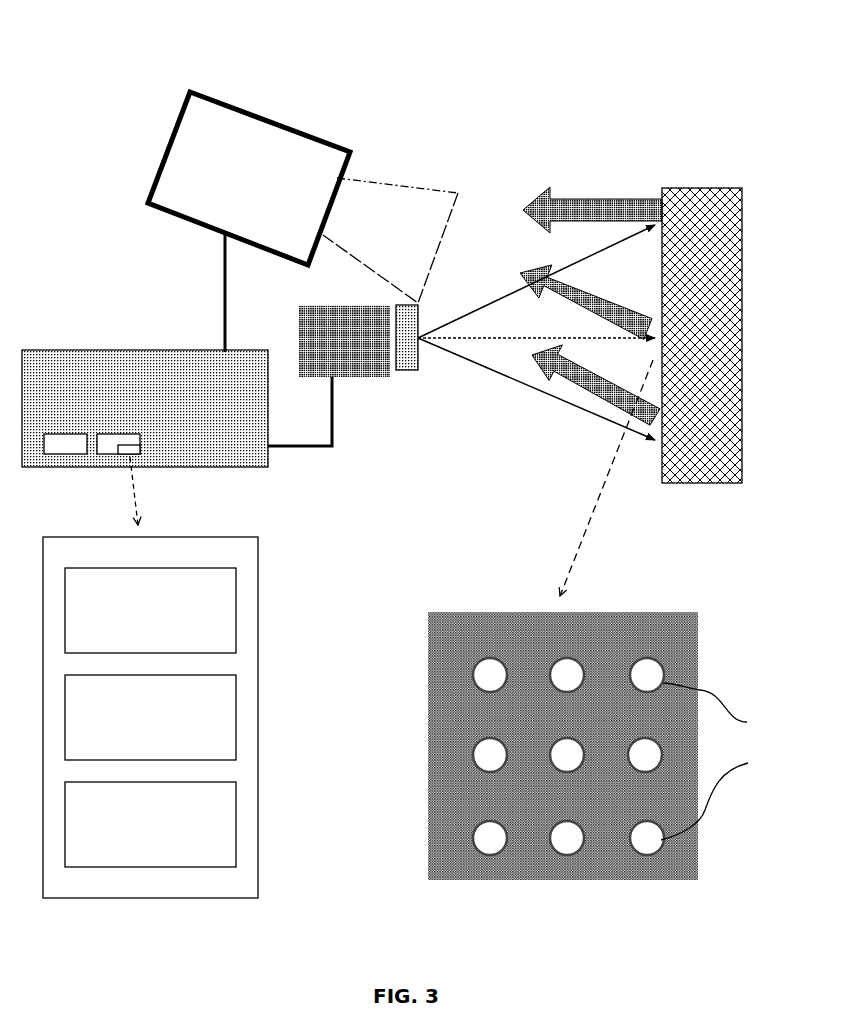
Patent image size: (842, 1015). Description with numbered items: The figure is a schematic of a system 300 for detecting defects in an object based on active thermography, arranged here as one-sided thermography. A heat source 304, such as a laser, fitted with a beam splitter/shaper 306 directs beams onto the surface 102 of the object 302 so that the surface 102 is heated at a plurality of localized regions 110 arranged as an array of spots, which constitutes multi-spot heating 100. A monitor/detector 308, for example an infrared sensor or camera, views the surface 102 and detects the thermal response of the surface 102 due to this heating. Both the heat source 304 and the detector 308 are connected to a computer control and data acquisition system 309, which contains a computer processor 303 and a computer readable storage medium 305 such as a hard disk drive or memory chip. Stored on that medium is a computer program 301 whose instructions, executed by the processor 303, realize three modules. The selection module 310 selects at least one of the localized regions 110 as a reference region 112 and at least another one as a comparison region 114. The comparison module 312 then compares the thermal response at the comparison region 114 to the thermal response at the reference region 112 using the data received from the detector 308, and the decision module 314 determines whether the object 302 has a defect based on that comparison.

The system for detecting defects 300 is at (292, 52).
The monitor/detector 308 is at (312, 138).
The computer control and data acquisition system 309 is at (80, 350).
The computer processor 303 is at (65, 457).
The computer readable storage medium 305 is at (108, 457).
The computer code or program 301 is at (258, 592).
The selection module 310 is at (237, 605).
The comparison module 312 is at (237, 700).
The decision module 314 is at (237, 805).
The heat source 304 is at (352, 382).
The beam splitter/shaper 306 is at (405, 372).
The object 302 is at (717, 195).
The surface 102 is at (662, 463).
The multi-spot heating 100 is at (633, 612).
The comparison region 114 is at (477, 674).
The localized regions 110 is at (661, 765).
The reference region 112 is at (557, 762).